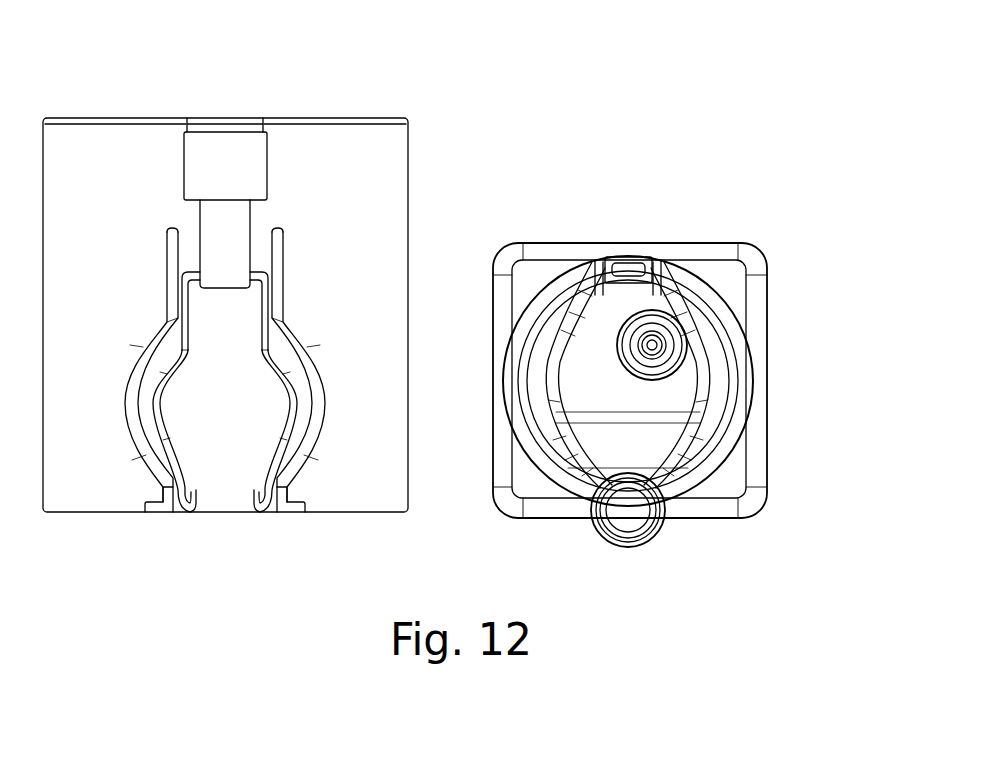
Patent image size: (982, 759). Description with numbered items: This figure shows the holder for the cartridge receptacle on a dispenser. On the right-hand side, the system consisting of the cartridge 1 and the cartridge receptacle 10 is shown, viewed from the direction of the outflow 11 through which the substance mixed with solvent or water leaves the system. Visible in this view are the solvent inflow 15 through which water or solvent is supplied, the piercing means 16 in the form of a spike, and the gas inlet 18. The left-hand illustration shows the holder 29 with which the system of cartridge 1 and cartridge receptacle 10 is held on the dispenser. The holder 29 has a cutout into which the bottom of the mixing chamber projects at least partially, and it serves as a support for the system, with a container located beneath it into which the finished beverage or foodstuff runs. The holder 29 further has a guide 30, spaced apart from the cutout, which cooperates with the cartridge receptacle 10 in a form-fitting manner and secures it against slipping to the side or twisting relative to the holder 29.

The cartridge 1 is at (740, 275).
The cartridge receptacle 10 is at (598, 262).
The outflow of substance plus solvent/water 11 is at (628, 515).
The solvent inflow 15 is at (227, 160).
The piercing means 16 is at (667, 358).
The gas inlet 18 is at (655, 344).
The holder 29 is at (373, 488).
The guide for the cartridge receptacle 30 is at (303, 480).